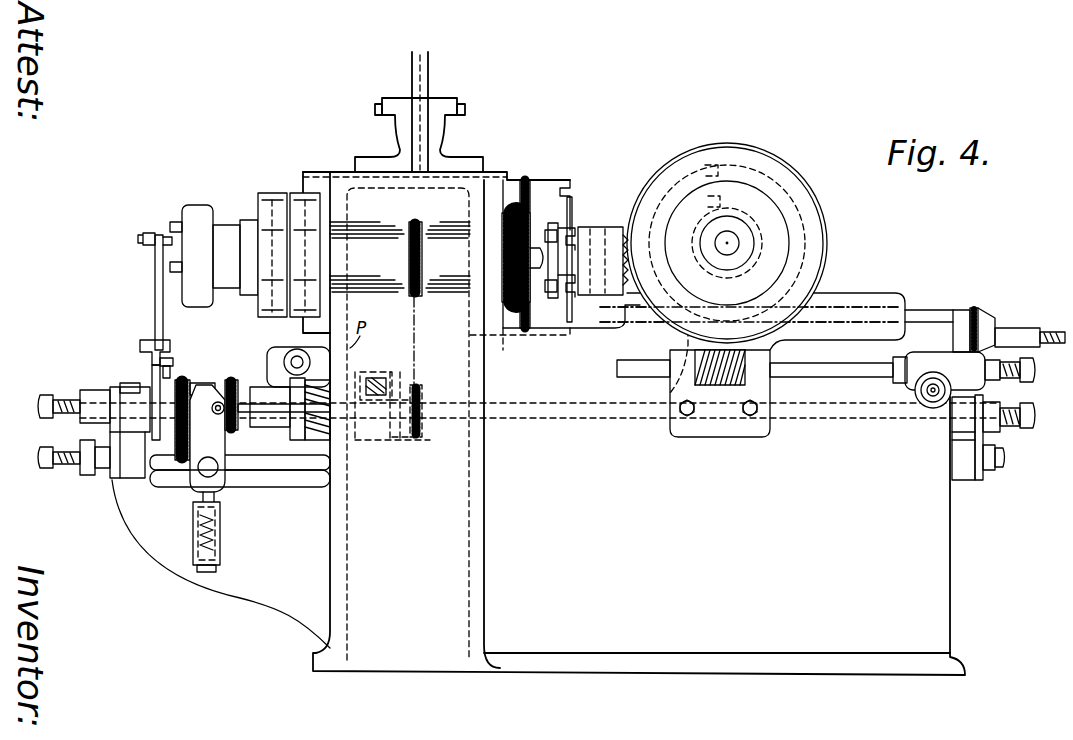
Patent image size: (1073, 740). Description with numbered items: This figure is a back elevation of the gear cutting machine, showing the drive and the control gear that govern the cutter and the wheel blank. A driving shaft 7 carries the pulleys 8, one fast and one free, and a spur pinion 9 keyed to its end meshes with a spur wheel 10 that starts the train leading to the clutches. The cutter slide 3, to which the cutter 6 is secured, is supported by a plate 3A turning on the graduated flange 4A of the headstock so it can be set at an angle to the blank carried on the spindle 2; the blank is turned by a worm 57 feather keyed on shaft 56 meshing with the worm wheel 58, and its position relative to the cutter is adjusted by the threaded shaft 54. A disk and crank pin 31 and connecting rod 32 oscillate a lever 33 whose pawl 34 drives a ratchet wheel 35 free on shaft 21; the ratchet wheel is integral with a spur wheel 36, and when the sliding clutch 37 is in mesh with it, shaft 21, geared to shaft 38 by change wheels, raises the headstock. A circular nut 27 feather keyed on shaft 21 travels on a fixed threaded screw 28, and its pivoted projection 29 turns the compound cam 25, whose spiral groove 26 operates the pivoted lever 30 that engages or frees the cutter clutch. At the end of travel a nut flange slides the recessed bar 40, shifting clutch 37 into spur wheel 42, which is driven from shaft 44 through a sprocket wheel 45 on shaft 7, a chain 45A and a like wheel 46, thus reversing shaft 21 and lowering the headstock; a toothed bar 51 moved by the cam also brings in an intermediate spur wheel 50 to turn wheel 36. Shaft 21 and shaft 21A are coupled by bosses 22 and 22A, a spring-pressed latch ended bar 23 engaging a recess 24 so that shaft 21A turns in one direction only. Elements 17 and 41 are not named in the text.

The spindle 2 is at (731, 254).
The cutter slide 3 is at (555, 290).
The plate 3A is at (553, 214).
The graduated flange 4A is at (524, 192).
The cutter 6 is at (625, 233).
The shaft 7 is at (246, 240).
The pulleys 8 is at (275, 195).
The spur pinion 9 is at (500, 252).
The spur wheel 10 is at (528, 212).
The motor housing 17 is at (185, 210).
The shaft 21 is at (68, 398).
The shaft 21A is at (1000, 420).
The coupling boss 22 is at (372, 442).
The coupling boss 22A is at (408, 446).
The latch ended bar 23 is at (393, 388).
The hollow recess 24 is at (392, 374).
The compound cam 25 is at (288, 352).
The spiral groove 26 is at (270, 372).
The circular nut 27 is at (276, 428).
The fixed threaded screw 28 is at (298, 424).
The projection 29 is at (298, 462).
The pivoted lever 30 is at (323, 343).
The disk and crank pin 31 is at (142, 238).
The connecting rod 32 is at (154, 297).
The lever 33 is at (152, 348).
The pawl 34 is at (170, 364).
The ratchet wheel 35 is at (165, 414).
The spur wheel 36 is at (182, 386).
The sliding clutch 37 is at (212, 398).
The shaft 38 is at (70, 462).
The recessed bar 40 is at (302, 396).
The lever 41 is at (196, 462).
The spur wheel 42 is at (236, 430).
The shaft 44 is at (422, 408).
The sprocket wheel 45 is at (415, 228).
The chain 45A is at (418, 322).
The sprocket wheel 46 is at (417, 436).
The intermediate spur wheel 50 is at (192, 455).
The toothed bar 51 is at (112, 388).
The threaded shaft 54 is at (1027, 335).
The shaft 56 is at (640, 362).
The worm 57 is at (693, 373).
The worm wheel 58 is at (662, 176).